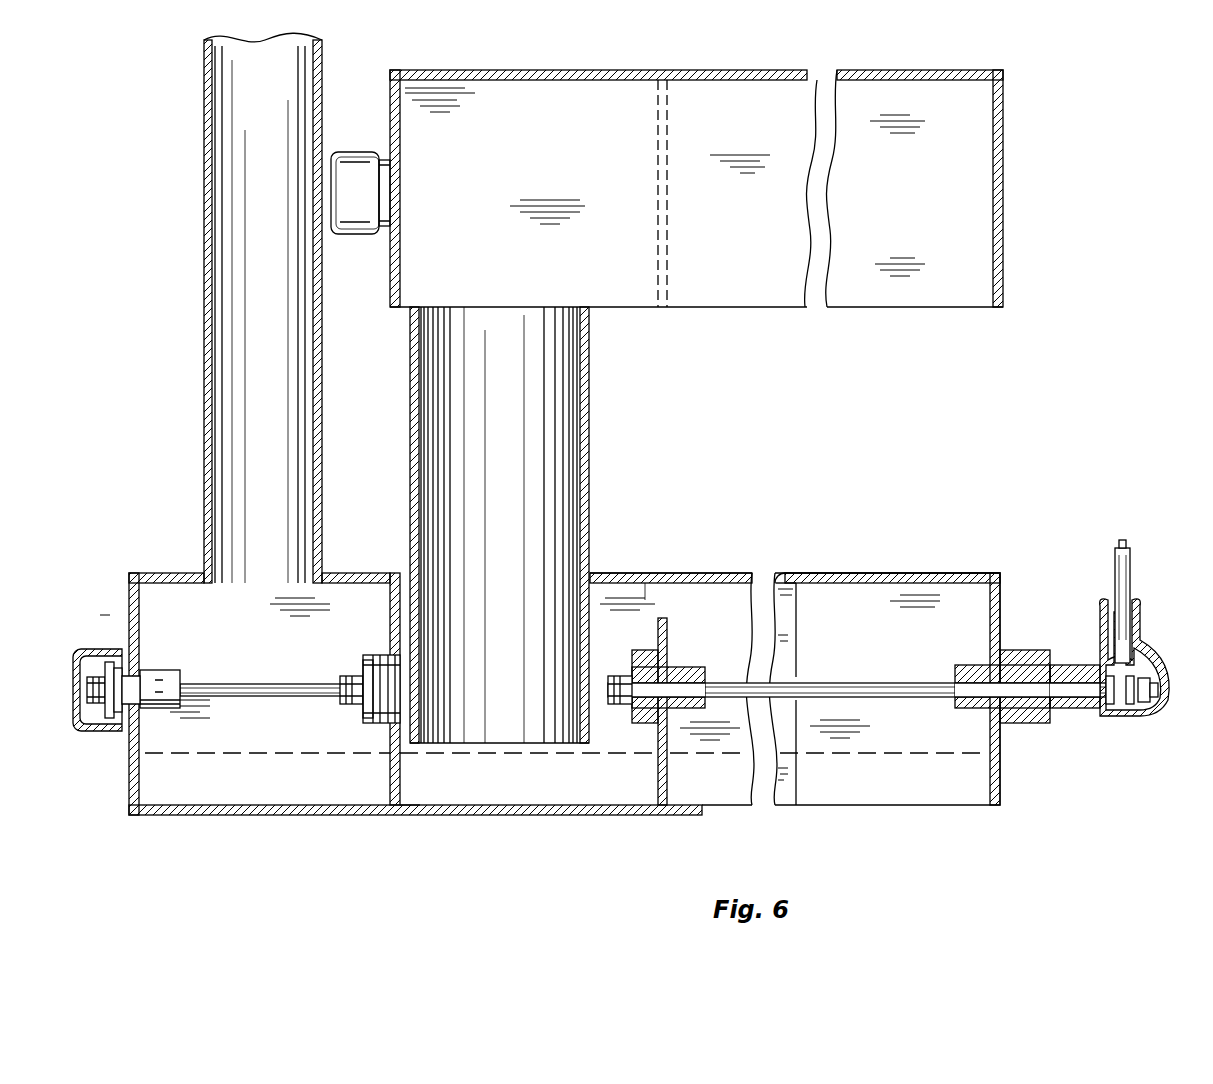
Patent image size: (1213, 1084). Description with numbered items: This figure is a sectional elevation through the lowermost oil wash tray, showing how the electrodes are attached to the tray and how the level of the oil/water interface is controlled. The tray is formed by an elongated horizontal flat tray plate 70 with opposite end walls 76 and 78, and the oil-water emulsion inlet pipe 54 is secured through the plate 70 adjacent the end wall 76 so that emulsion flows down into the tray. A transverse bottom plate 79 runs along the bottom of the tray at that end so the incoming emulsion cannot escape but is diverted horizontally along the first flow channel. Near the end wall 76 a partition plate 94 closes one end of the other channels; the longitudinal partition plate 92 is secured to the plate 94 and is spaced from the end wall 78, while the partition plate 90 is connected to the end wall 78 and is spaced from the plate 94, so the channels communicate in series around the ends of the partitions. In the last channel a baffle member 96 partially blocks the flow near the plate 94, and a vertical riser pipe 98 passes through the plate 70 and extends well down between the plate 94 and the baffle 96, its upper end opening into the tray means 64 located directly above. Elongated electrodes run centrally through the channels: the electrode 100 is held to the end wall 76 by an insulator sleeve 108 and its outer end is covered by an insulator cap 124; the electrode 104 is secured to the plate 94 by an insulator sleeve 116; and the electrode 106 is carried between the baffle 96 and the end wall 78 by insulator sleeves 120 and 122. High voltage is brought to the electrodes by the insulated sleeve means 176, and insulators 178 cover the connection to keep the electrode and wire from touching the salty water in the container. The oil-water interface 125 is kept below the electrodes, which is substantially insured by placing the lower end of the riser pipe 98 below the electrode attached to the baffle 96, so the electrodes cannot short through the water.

The oil-water emulsion inlet pipe 54 is at (205, 345).
The tray means 64 is at (446, 67).
The flat tray plate 70 is at (702, 573).
The end wall 76 is at (129, 592).
The end wall 78 is at (1002, 590).
The bottom plate 79 is at (500, 815).
The partition plate 90 is at (935, 595).
The partition plate 92 is at (645, 590).
The partition plate 94 is at (403, 790).
The baffle member 96 is at (670, 795).
The riser pipe 98 is at (590, 393).
The electrode 100 is at (262, 690).
The electrode 104 is at (348, 690).
The electrode 106 is at (870, 690).
The insulator sleeve 108 is at (165, 682).
The insulator sleeve 116 is at (375, 655).
The insulator sleeve 120 is at (685, 667).
The insulator sleeve 122 is at (1030, 723).
The insulator cap 124 is at (90, 733).
The oil-water interface 125 is at (230, 758).
The insulated sleeve means 176 is at (1136, 548).
The insulator 178 is at (1150, 716).